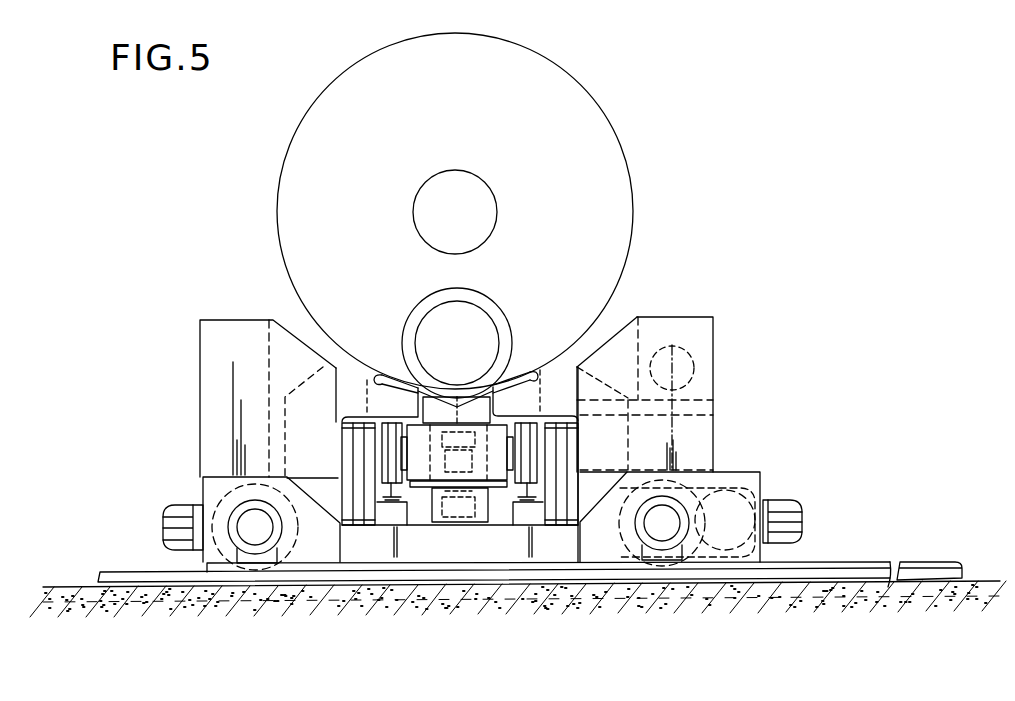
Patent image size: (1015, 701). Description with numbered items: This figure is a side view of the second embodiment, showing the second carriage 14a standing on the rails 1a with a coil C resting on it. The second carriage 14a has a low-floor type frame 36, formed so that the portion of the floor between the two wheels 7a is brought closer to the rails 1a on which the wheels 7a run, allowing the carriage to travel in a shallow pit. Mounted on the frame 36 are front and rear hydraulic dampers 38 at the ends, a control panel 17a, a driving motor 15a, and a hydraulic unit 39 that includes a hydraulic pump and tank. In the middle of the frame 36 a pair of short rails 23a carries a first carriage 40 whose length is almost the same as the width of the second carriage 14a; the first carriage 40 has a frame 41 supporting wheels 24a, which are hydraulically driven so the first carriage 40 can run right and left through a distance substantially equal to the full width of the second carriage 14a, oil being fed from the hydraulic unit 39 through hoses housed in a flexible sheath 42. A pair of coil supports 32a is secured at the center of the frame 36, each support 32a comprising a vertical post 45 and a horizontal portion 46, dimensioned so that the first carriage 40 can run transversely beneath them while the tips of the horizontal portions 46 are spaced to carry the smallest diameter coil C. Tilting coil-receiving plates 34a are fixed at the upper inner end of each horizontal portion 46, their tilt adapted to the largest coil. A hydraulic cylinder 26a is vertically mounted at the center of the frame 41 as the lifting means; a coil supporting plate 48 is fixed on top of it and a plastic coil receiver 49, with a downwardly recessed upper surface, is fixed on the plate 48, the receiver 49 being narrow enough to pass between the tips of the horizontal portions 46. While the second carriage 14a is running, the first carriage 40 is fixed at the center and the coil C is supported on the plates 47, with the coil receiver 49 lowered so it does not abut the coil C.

The coil C is at (608, 118).
The hydraulic unit 39 is at (216, 327).
The horizontal portion 46 is at (350, 397).
The tilting coil-receiving plate 34a is at (372, 378).
The plates 47 is at (388, 372).
The coil supporting plate 48 is at (437, 417).
The coil receiver 49 is at (483, 405).
The coil support 32a is at (572, 360).
The control panel 17a is at (690, 322).
The driving motor 15a is at (692, 362).
The second carriage 14a is at (717, 398).
The vertical post 45 is at (628, 432).
The wheels 24a is at (382, 455).
The short rails 23a is at (388, 496).
The frame 41 is at (497, 475).
The hydraulic cylinder 26a is at (458, 510).
The first carriage 40 is at (418, 497).
The flexible sheath 42 is at (353, 523).
The low-floor type frame 36 is at (332, 550).
The wheels 7a is at (258, 555).
The hydraulic dampers 38 is at (170, 508).
The rails 1a is at (843, 562).